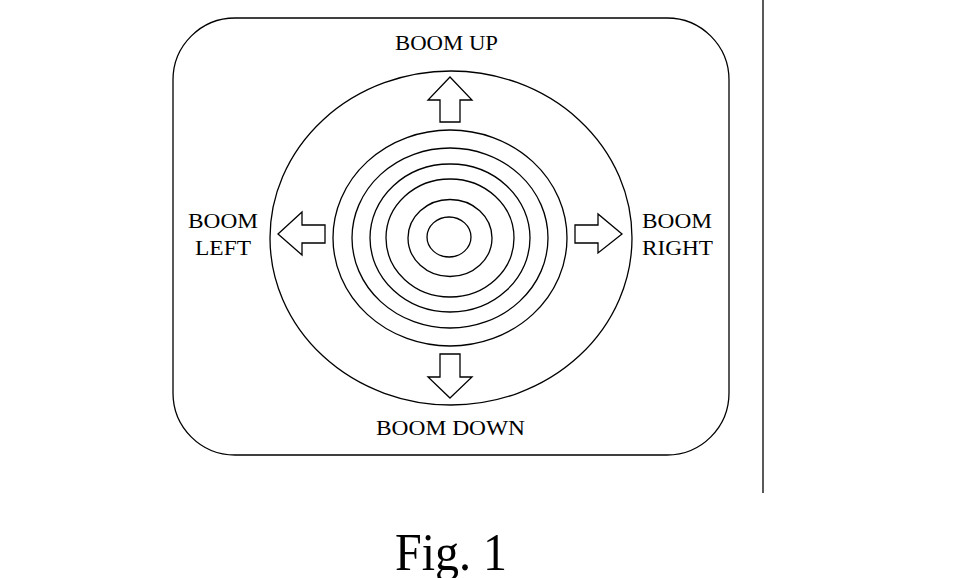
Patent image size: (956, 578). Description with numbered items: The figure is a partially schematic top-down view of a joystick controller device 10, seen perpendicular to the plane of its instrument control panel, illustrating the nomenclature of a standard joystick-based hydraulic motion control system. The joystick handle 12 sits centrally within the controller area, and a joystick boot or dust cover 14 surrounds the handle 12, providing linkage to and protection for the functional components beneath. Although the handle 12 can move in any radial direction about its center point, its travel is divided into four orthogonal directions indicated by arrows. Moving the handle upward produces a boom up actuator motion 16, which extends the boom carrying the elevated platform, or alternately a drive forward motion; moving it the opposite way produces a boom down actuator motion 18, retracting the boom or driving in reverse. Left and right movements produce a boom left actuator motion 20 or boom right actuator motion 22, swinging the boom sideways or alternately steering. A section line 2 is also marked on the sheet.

The section line 2 is at (827, 1).
The joystick controller device 10 is at (120, 138).
The joystick handle 12 is at (458, 228).
The joystick boot or dust cover 14 is at (383, 288).
The boom up actuator motion 16 is at (420, 116).
The boom down actuator motion 18 is at (508, 383).
The boom left actuator motion 20 is at (235, 285).
The boom right actuator motion 22 is at (690, 285).